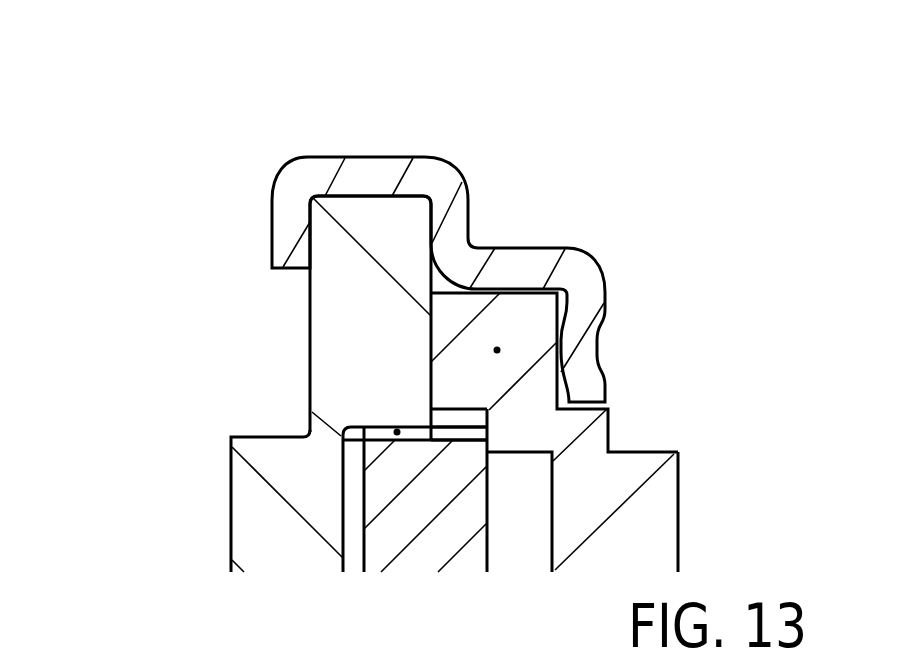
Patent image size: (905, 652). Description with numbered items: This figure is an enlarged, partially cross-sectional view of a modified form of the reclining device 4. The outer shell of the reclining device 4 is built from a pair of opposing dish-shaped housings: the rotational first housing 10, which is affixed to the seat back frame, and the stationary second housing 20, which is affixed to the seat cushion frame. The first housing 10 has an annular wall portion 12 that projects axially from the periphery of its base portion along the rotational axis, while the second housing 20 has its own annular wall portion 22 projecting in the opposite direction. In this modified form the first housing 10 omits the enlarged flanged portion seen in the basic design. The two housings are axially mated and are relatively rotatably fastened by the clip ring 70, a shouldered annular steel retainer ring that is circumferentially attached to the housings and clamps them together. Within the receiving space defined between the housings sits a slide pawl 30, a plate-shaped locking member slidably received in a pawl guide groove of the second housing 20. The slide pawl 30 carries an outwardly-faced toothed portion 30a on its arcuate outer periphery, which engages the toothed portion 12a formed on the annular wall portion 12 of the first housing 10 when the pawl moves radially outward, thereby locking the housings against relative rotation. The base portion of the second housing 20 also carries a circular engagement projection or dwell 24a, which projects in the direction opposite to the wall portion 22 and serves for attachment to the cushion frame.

The reclining device 4 is at (503, 105).
The clip ring 70 is at (460, 227).
The annular wall portion 12 is at (372, 356).
The toothed portion 12a is at (397, 432).
The toothed portion 30a is at (441, 435).
The second housing 20 is at (530, 410).
The annular wall portion 22 is at (497, 350).
The slide pawl 30 is at (468, 497).
The first housing 10 is at (262, 538).
The engagement projection 24a is at (637, 543).